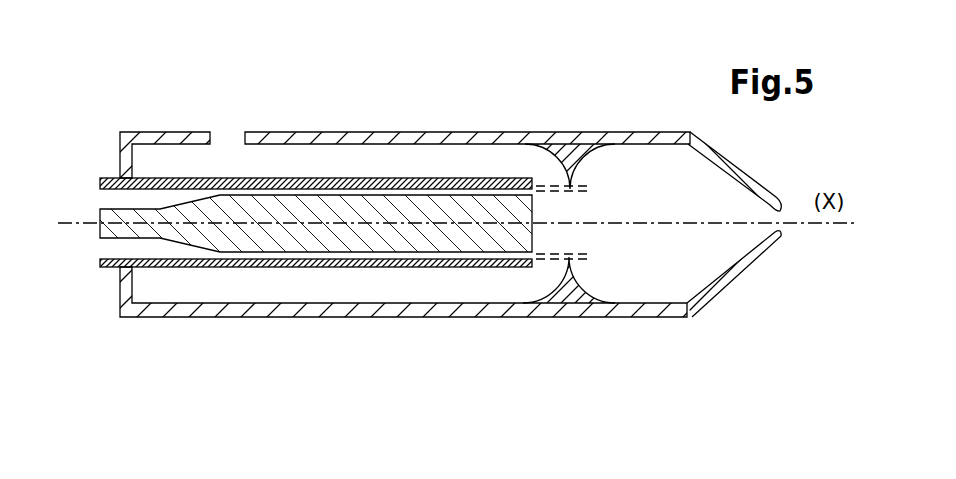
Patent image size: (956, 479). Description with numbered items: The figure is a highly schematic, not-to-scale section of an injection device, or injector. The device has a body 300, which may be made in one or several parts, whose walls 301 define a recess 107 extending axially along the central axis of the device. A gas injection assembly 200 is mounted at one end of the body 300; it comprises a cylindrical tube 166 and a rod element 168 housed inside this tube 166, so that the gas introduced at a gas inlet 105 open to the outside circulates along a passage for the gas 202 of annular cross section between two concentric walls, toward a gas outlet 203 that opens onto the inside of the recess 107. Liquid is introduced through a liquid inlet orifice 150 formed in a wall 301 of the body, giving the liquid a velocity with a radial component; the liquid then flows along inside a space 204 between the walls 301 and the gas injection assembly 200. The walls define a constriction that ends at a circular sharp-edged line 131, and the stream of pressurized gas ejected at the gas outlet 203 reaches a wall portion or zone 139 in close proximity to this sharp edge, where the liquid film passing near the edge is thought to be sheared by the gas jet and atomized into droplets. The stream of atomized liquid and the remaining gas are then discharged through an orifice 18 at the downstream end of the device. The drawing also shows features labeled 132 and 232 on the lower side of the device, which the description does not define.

The orifice 18 is at (785, 228).
The gas inlet 105 is at (101, 248).
The recess 107 is at (342, 288).
The circular sharp-edged line 131 is at (572, 191).
The lower flap attachment zone 132 is at (549, 270).
The wall portion or zone 139 is at (596, 183).
The liquid inlet orifice 150 is at (228, 132).
The cylindrical tube 166 is at (430, 267).
The rod element 168 is at (255, 240).
The gas injection assembly 200 is at (158, 272).
The passage for the gas 202 is at (354, 184).
The gas outlet 203 is at (538, 172).
The space 204 is at (445, 130).
The lower connecting neck 232 is at (594, 278).
The body 300 is at (206, 304).
The walls 301 is at (297, 130).